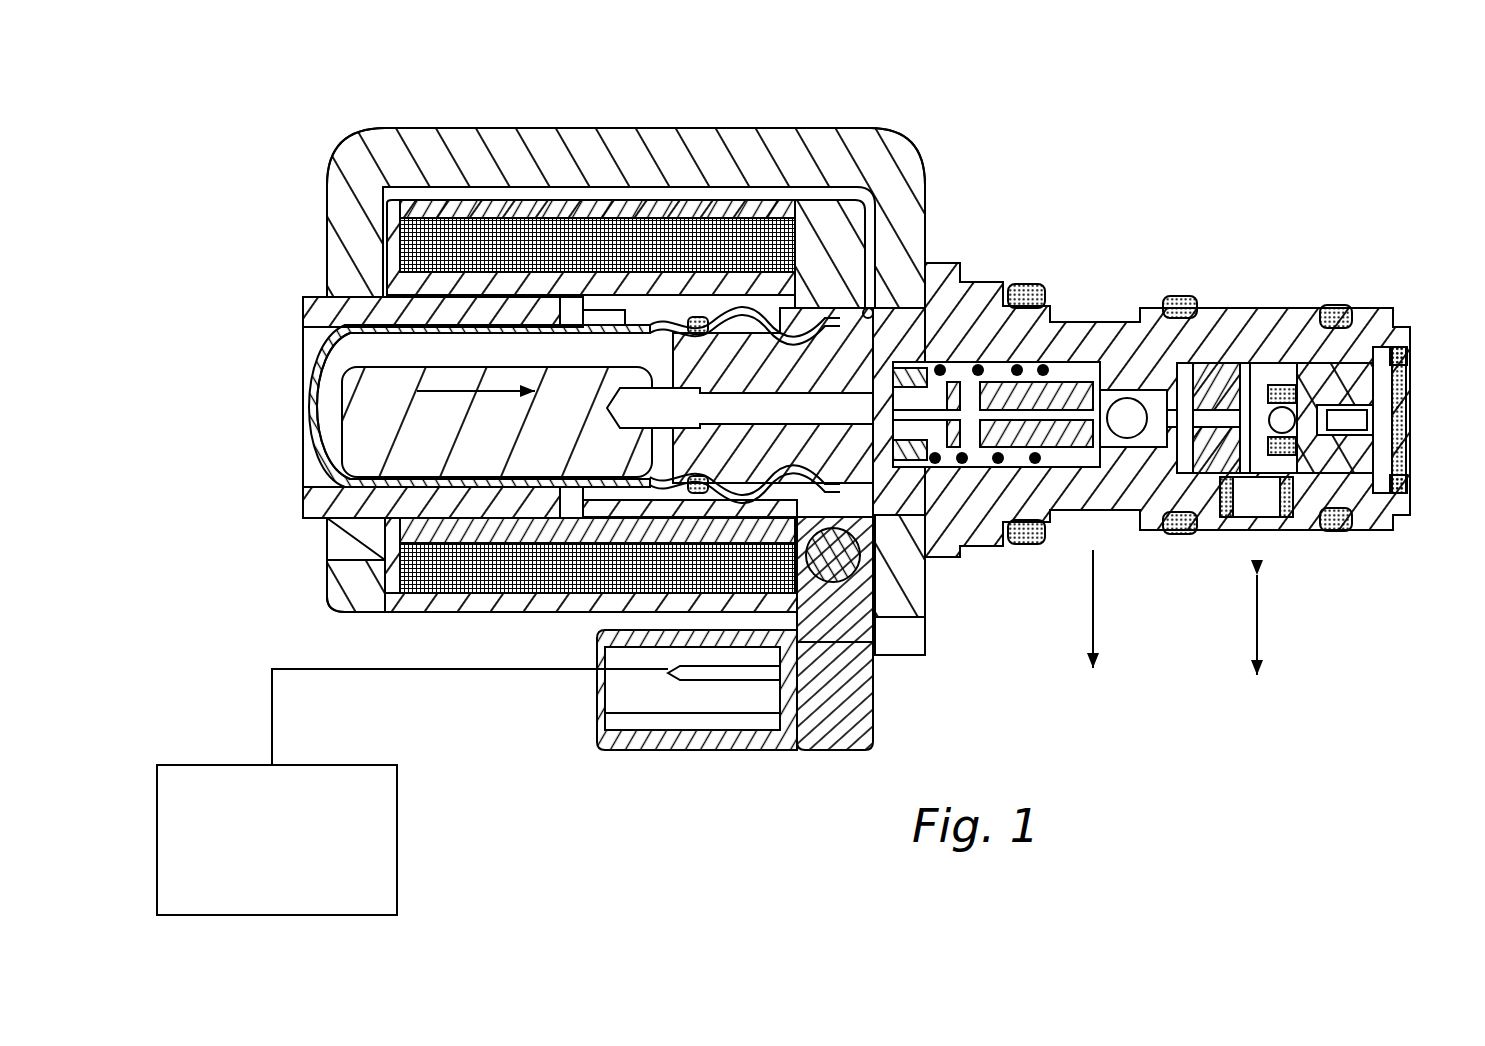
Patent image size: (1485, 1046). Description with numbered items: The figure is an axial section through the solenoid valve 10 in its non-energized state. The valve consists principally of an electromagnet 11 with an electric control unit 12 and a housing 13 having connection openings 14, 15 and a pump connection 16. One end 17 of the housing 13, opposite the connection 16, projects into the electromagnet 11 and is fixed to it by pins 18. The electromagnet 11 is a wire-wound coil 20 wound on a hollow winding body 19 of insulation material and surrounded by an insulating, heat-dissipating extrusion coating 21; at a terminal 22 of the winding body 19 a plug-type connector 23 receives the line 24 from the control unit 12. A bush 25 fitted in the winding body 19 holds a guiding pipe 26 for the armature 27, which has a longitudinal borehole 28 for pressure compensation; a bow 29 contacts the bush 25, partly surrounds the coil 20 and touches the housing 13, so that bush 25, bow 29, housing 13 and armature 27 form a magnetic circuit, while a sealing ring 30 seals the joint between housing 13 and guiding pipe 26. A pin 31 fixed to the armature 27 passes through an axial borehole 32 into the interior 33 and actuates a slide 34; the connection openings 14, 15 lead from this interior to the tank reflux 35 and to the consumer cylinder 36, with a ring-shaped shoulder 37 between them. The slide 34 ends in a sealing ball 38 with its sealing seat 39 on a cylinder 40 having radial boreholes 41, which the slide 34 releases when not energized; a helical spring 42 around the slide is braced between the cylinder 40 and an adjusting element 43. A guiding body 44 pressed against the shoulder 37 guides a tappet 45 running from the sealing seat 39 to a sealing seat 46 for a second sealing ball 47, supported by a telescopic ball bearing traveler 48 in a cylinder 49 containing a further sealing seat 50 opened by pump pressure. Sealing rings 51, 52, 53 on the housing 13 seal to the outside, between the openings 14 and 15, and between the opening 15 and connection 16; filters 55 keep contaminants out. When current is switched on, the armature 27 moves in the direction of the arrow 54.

The solenoid valve 10 is at (292, 515).
The electromagnet 11 is at (340, 255).
The electric control unit 12 is at (298, 860).
The housing 13 is at (983, 288).
The connection opening 14 is at (1087, 462).
The connection opening 15 is at (1268, 515).
The connection 16 is at (1410, 402).
The end of the housing 17 is at (722, 334).
The pins 18 is at (880, 503).
The winding body 19 is at (905, 258).
The coil 20 is at (405, 245).
The extrusion coating 21 is at (395, 614).
The terminal 22 is at (867, 718).
The plug-type connector 23 is at (643, 695).
The line 24 is at (470, 717).
The bush 25 is at (303, 302).
The guiding pipe 26 is at (333, 360).
The armature 27 is at (337, 413).
The longitudinal borehole 28 is at (328, 372).
The bow 29 is at (345, 152).
The sealing ring 30 is at (735, 245).
The pin 31 is at (867, 297).
The axial borehole 32 is at (805, 290).
The interior 33 is at (1040, 545).
The slide 34 is at (995, 466).
The tank reflux 35 is at (1097, 620).
The cylinder (consumer) 36 is at (1265, 655).
The ring-shaped shoulder 37 is at (1190, 375).
The sealing ball 38 is at (1085, 360).
The sealing seat 39 is at (1150, 365).
The cylinder 40 is at (1100, 395).
The radial boreholes 41 is at (1132, 450).
The helical spring 42 is at (925, 370).
The adjusting element 43 is at (905, 305).
The guiding body 44 is at (1212, 365).
The tappet 45 is at (1240, 535).
The sealing seat 46 is at (1270, 400).
The sealing ball 47 is at (1277, 405).
The telescopic ball bearing traveler 48 is at (1292, 375).
The cylinder 49 is at (1352, 360).
The sealing seat 50 is at (1337, 315).
The sealing ring 51 is at (1023, 288).
The sealing ring 52 is at (1182, 300).
The sealing ring 53 is at (1337, 535).
The arrow 54 is at (476, 412).
The filters 55 is at (1405, 447).